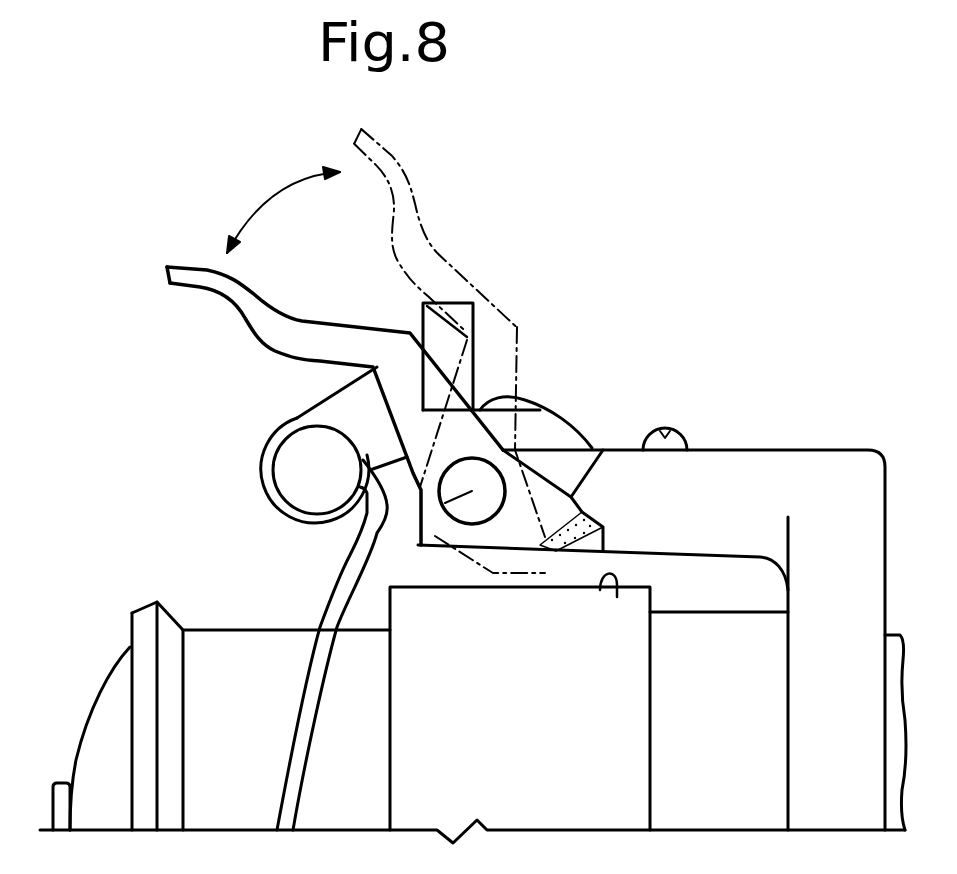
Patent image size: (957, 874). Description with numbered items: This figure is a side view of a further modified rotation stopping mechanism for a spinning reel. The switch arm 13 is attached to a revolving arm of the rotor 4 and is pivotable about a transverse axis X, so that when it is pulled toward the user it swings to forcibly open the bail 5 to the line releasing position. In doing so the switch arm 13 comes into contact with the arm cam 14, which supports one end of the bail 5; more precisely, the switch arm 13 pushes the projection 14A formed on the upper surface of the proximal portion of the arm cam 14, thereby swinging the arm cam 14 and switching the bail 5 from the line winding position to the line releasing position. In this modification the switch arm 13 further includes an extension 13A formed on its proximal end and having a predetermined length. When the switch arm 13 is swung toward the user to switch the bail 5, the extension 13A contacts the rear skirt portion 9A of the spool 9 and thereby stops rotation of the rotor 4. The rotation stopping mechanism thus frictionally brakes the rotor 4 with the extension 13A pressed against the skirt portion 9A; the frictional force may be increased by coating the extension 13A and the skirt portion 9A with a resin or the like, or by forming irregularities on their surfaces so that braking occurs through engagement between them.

The switch arm 13 is at (167, 282).
The extension 13A is at (545, 537).
The arm cam 14 is at (297, 418).
The projection 14A is at (465, 303).
The rotor 4 is at (718, 443).
The bail 5 is at (277, 770).
The spool 9 is at (237, 628).
The rear skirt portion 9A is at (617, 597).
The transverse axis X is at (445, 503).